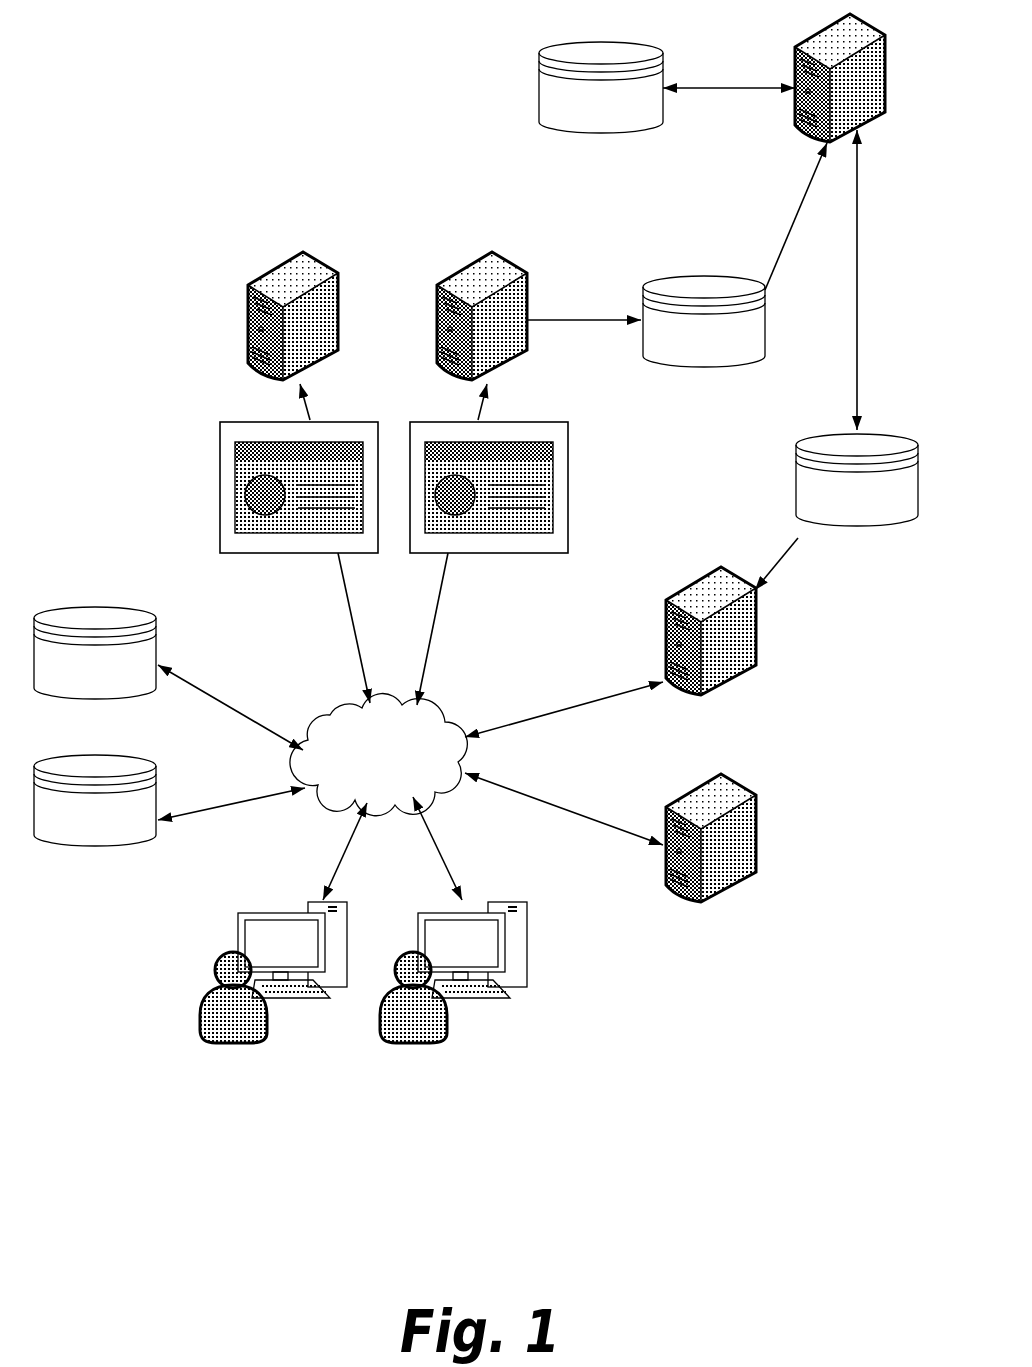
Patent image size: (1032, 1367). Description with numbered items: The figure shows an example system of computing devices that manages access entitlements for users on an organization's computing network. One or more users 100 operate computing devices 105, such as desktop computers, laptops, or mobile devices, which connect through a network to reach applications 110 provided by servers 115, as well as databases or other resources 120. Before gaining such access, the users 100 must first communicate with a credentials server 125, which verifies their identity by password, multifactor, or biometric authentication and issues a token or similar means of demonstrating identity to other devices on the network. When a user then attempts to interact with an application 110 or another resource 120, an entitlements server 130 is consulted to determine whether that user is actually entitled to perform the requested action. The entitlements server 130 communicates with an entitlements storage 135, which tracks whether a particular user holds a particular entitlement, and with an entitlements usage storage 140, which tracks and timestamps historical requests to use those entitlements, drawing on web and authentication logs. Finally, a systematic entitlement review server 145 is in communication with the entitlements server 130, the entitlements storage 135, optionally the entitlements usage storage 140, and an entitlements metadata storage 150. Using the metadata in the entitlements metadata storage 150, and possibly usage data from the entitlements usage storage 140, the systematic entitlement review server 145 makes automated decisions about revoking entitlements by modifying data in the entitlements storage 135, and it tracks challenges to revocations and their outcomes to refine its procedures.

The users 100 is at (207, 1037).
The computing devices 105 is at (261, 954).
The applications 110 is at (220, 422).
The servers 115 is at (248, 285).
The databases or other resources 120 is at (74, 683).
The credentials server 125 is at (756, 873).
The entitlements server 130 is at (756, 665).
The entitlements storage 135 is at (836, 508).
The entitlements usage storage 140 is at (683, 349).
The systematic entitlement review server 145 is at (808, 40).
The entitlements metadata storage 150 is at (580, 115).